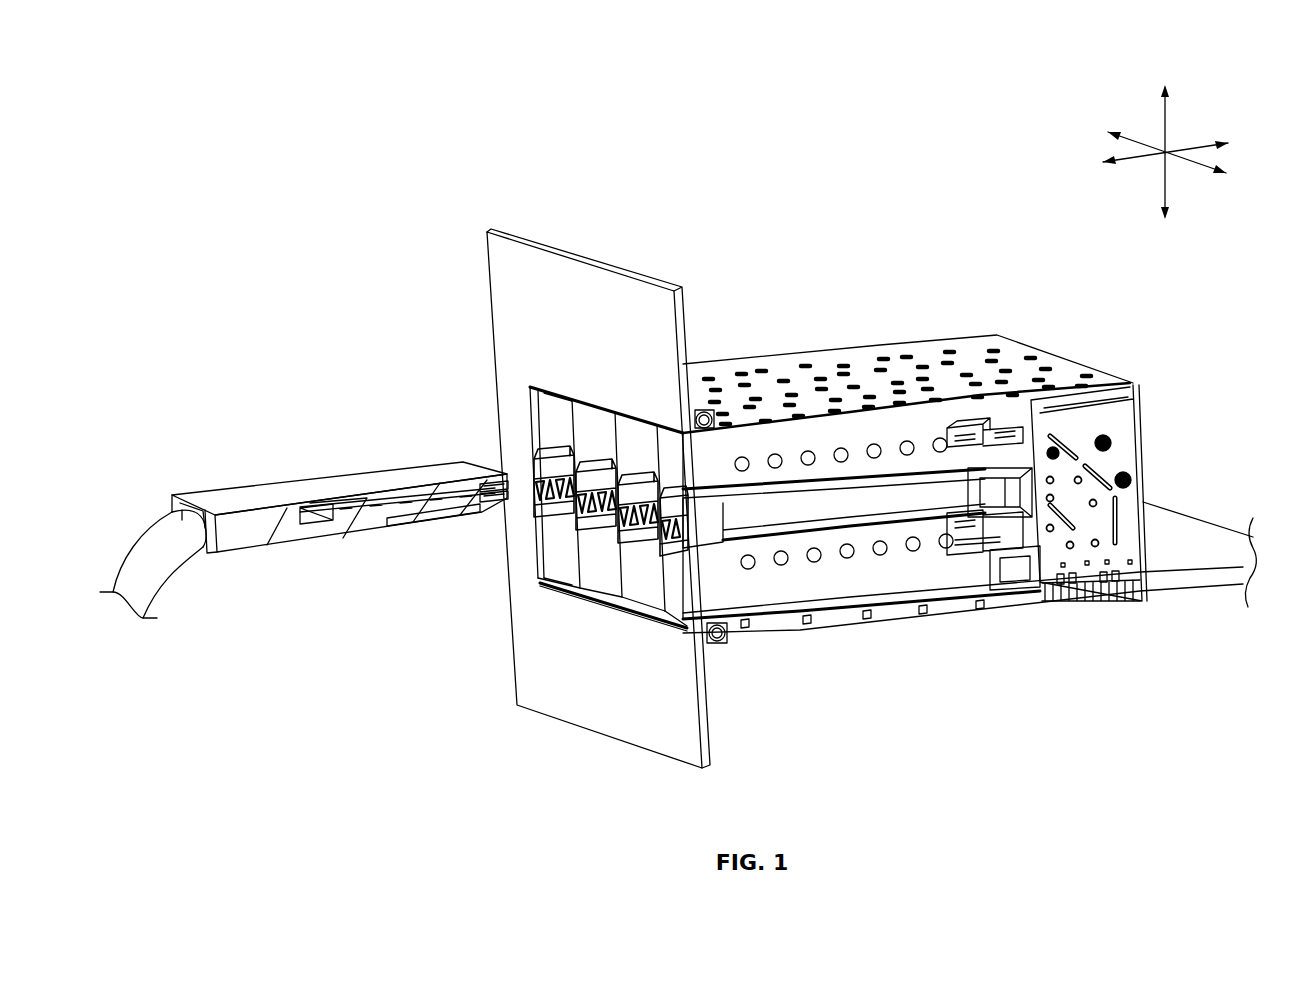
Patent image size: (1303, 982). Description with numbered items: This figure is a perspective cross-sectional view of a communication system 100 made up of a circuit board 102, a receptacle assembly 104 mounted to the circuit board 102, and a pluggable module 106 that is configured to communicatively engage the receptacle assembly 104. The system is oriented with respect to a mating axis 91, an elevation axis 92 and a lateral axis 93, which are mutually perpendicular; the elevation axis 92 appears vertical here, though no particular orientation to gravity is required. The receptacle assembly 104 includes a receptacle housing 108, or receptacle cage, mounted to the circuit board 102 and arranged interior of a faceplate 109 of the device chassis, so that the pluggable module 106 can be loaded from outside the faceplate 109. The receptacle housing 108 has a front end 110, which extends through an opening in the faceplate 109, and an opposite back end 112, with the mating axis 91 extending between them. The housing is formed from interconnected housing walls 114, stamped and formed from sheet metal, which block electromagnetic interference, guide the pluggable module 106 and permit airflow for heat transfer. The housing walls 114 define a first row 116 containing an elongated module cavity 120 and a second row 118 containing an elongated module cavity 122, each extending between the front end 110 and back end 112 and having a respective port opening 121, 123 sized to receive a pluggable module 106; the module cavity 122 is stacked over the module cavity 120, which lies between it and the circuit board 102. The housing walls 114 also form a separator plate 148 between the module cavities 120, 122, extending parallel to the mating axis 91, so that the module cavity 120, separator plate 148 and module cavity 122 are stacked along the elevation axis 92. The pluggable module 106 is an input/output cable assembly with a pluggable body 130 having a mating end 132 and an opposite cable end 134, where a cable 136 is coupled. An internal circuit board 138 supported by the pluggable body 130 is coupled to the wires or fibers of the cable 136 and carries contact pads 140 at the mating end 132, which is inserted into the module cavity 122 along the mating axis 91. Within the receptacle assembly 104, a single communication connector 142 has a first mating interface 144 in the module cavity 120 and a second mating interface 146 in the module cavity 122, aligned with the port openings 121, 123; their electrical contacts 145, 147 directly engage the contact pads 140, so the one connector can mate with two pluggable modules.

The communication system 100 is at (460, 150).
The mating axis 91 is at (1205, 145).
The elevation axis 92 is at (1162, 118).
The lateral axis 93 is at (1195, 160).
The circuit board 102 is at (1253, 537).
The receptacle assembly 104 is at (972, 498).
The pluggable module 106 is at (307, 515).
The receptacle housing 108 is at (932, 360).
The faceplate 109 is at (607, 300).
The front end 110 is at (569, 470).
The back end 112 is at (1158, 392).
The housing walls 114 is at (723, 380).
The first row 116 is at (552, 592).
The second row 118 is at (522, 440).
The module cavity 120 is at (765, 602).
The port opening 121 is at (688, 600).
The module cavity 122 is at (691, 473).
The port opening 123 is at (676, 466).
The pluggable body 130 is at (240, 493).
The mating end 132 is at (513, 503).
The cable end 134 is at (168, 510).
The cable 136 is at (160, 578).
The internal circuit board 138 is at (425, 515).
The contact pads 140 is at (487, 488).
The communication connector 142 is at (1123, 447).
The first mating interface 144 is at (985, 575).
The electrical contacts 145 is at (983, 562).
The second mating interface 146 is at (972, 415).
The electrical contacts 147 is at (973, 447).
The separator plate 148 is at (831, 517).